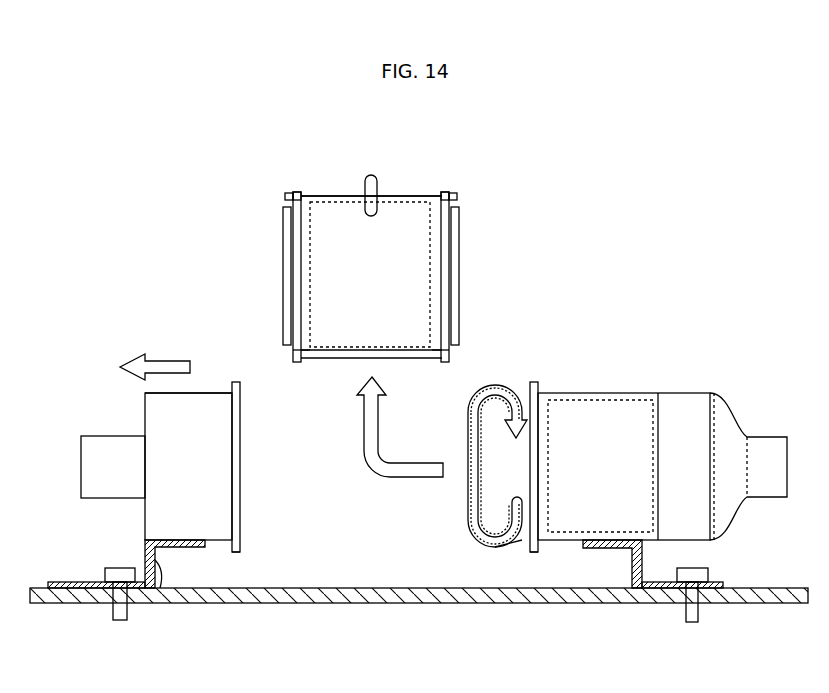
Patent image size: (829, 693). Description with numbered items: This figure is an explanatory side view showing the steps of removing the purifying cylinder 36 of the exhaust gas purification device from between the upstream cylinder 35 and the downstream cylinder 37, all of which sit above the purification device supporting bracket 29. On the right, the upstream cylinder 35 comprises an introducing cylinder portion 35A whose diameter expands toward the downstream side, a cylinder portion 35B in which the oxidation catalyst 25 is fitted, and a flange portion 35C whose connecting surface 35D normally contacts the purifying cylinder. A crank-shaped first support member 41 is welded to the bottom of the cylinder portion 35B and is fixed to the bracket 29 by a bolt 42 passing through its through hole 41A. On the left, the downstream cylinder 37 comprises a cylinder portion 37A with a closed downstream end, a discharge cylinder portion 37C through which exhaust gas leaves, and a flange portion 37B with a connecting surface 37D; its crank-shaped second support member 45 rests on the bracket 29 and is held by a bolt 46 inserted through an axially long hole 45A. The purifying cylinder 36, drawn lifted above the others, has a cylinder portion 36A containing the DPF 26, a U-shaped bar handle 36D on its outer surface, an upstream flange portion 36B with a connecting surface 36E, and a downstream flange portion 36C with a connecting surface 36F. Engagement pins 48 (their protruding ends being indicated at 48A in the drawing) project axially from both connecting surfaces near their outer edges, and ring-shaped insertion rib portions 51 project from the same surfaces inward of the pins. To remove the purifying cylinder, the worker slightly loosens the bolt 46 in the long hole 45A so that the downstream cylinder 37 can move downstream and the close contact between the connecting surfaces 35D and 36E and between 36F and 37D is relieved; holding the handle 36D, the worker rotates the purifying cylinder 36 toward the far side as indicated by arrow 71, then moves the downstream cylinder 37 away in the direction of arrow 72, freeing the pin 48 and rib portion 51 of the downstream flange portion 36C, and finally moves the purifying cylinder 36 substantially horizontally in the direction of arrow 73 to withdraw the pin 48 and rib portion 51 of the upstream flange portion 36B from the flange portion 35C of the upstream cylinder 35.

The oxidation catalyst 25 is at (606, 398).
The DPF 26 is at (334, 195).
The purification device supporting bracket 29 is at (316, 604).
The upstream cylinder 35 is at (657, 390).
The introducing cylinder portion 35A is at (712, 392).
The cylinder portion 35B is at (536, 383).
The flange portion 35C is at (536, 556).
The connecting surface 35D is at (521, 546).
The purifying cylinder 36 is at (389, 186).
The cylinder portion 36A is at (418, 195).
The upstream flange portion 36B is at (444, 364).
The downstream flange portion 36C is at (296, 364).
The handle 36D is at (371, 175).
The connecting surface 36E is at (450, 352).
The connecting surface 36F is at (292, 352).
The downstream cylinder 37 is at (201, 382).
The cylinder portion 37A is at (146, 392).
The flange portion 37B is at (242, 552).
The discharge cylinder portion 37C is at (102, 435).
The connecting surface 37D is at (242, 530).
The first support member 41 is at (636, 592).
The through hole 41A is at (692, 606).
The bolt 42 is at (702, 570).
The second support member 45 is at (154, 598).
The long hole 45A is at (88, 582).
The bolt 46 is at (119, 566).
The engagement pin 48 is at (285, 197).
The clamp end 48A is at (296, 191).
The insertion rib portion 51 is at (283, 249).
The arrow 71 is at (466, 519).
The arrow 72 is at (164, 360).
The arrow 73 is at (363, 430).